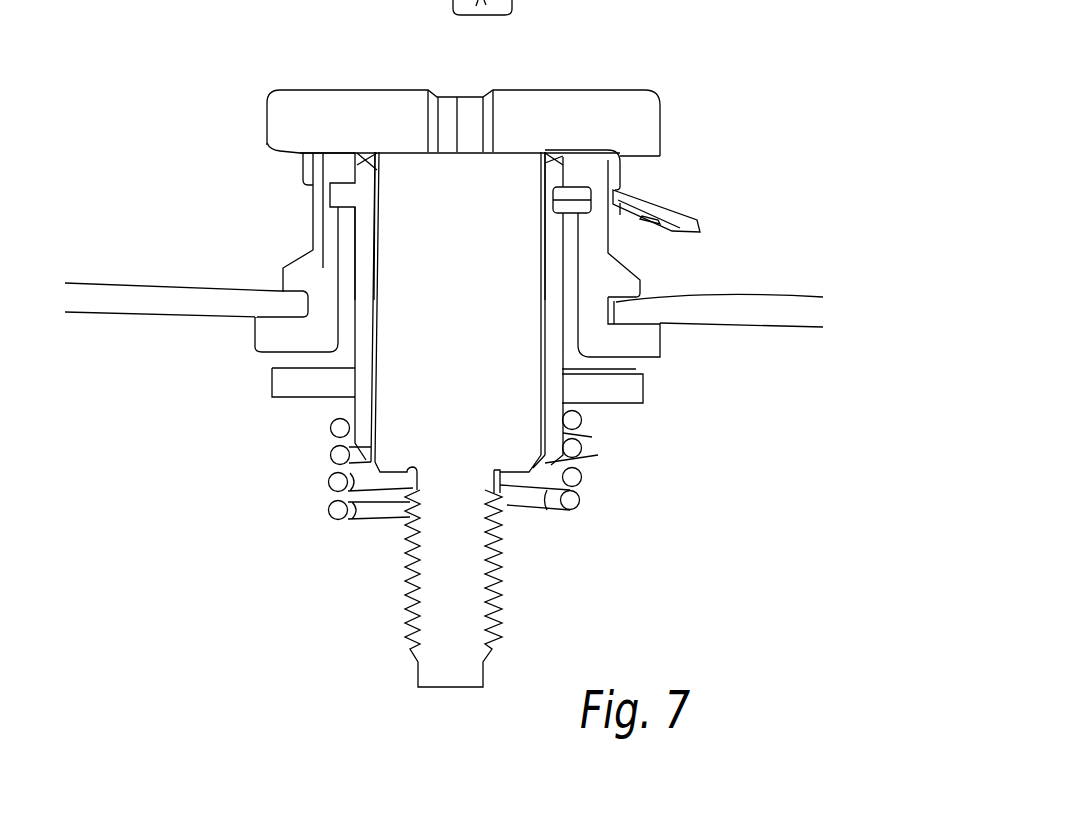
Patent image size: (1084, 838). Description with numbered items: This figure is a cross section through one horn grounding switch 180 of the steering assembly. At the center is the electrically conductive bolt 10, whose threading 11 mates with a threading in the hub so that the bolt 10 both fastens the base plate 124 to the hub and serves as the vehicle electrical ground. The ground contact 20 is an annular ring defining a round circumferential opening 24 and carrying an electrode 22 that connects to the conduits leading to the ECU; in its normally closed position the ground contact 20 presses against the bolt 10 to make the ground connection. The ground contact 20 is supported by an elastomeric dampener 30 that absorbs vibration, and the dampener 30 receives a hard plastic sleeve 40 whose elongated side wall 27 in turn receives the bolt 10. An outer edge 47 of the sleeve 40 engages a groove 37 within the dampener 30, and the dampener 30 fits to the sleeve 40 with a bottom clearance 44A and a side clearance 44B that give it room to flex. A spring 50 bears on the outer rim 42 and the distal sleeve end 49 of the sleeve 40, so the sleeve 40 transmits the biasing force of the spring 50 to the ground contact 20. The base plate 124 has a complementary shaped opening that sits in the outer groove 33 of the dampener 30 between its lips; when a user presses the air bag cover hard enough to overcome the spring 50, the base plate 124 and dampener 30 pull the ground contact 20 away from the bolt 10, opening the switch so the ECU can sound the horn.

The bolt 10 is at (466, 323).
The threading 11 is at (497, 597).
The ground contact 20 is at (620, 173).
The electrode 22 is at (684, 208).
The circumferential opening 24 is at (385, 170).
The elongated side wall 27 is at (378, 191).
The dampener 30 is at (608, 282).
The outer groove 33 is at (614, 303).
The groove 37 is at (584, 200).
The sleeve 40 is at (632, 390).
The outer rim 42 is at (607, 399).
The bottom clearance 44A is at (331, 250).
The side clearance 44B is at (647, 372).
The outer edge 47 is at (572, 202).
The distal sleeve end 49 is at (567, 460).
The spring 50 is at (573, 503).
The base plate 124 is at (814, 309).
The horn grounding switch 180 is at (669, 60).